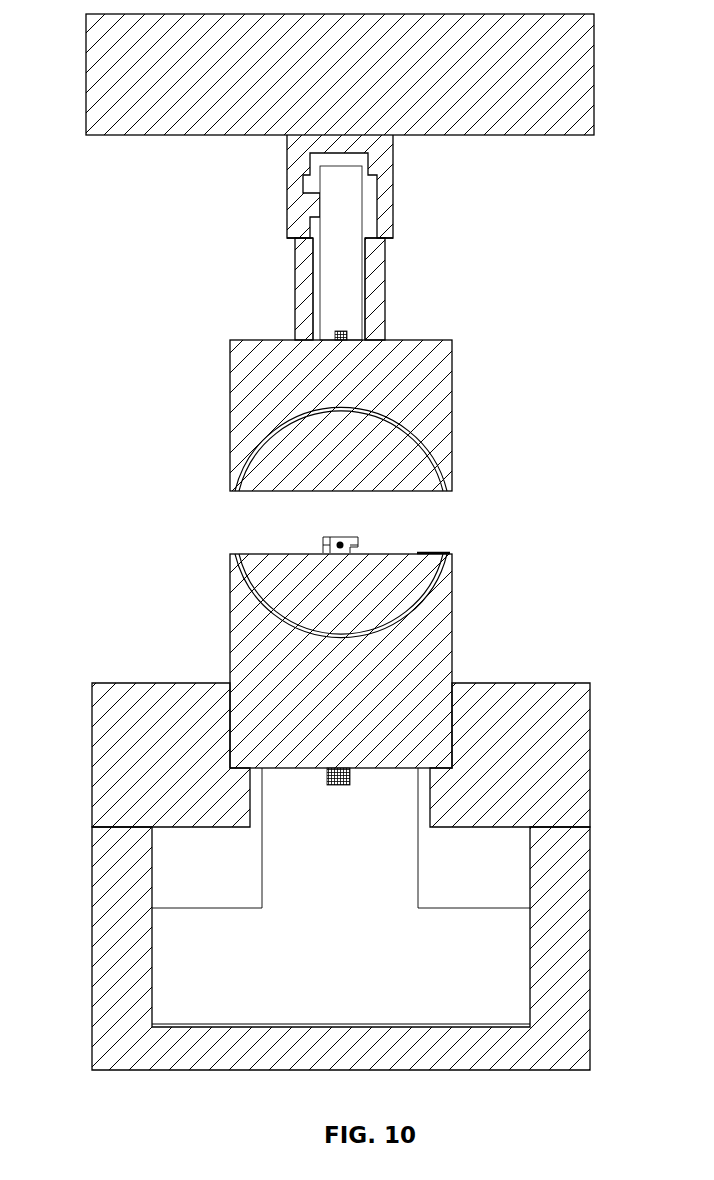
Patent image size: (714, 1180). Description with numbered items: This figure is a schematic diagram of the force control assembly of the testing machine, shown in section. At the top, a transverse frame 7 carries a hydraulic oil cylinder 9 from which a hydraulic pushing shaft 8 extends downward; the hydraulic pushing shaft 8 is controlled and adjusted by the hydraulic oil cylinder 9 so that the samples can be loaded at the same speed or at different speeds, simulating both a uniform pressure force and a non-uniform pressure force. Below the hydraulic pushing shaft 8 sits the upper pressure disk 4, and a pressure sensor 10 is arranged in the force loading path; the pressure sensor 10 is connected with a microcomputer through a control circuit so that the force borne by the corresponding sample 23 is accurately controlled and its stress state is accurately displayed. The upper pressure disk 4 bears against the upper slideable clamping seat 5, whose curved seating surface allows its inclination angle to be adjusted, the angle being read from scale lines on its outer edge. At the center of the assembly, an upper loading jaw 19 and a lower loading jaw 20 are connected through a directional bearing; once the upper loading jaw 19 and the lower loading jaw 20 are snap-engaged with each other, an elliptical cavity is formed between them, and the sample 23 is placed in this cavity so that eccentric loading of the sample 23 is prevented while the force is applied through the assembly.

The transverse frame 7 is at (125, 110).
The hydraulic oil cylinder 9 is at (300, 147).
The hydraulic pushing shaft 8 is at (332, 256).
The pressure sensor 10 is at (336, 338).
The upper pressure disk 4 is at (427, 340).
The upper slideable clamping seat 5 is at (375, 435).
The upper loading jaw 19 is at (355, 540).
The sample 23 is at (343, 545).
The lower loading jaw 20 is at (350, 549).